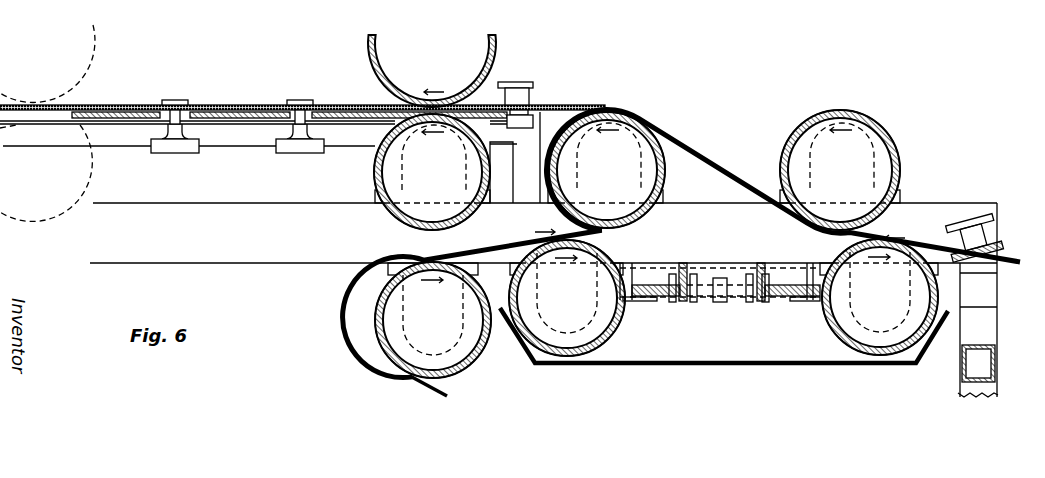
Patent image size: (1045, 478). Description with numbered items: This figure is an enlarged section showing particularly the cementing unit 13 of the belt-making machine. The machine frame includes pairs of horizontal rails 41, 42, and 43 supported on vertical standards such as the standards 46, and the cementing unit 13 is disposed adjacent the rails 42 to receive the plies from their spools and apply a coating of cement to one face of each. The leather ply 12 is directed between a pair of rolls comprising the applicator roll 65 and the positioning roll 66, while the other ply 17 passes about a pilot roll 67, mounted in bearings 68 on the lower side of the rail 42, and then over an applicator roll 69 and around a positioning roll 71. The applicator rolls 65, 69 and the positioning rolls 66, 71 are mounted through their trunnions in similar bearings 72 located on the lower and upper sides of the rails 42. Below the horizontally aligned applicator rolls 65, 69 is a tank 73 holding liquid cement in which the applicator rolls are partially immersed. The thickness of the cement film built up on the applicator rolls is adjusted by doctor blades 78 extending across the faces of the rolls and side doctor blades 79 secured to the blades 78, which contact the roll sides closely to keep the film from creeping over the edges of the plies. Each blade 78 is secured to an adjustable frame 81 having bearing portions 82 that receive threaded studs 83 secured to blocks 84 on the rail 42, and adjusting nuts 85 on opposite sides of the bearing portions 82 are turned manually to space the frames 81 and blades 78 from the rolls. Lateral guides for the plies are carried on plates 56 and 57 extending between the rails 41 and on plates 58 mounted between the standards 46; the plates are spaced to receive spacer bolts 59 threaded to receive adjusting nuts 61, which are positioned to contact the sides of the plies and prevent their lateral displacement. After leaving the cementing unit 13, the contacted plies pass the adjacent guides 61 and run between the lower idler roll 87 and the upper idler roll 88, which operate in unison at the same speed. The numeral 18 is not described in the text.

The ply 12 is at (690, 140).
The cementing unit 13 is at (711, 93).
The ply 17 is at (400, 383).
The bearing plate 18 is at (627, 295).
The horizontal rails 41 is at (242, 130).
The horizontal rails 42 is at (543, 300).
The horizontal rails 43 is at (904, 0).
The vertical standards 46 is at (978, 330).
The plate 56 is at (361, 88).
The plate 57 is at (528, 117).
The plates 58 is at (943, 250).
The spacer bolts 59 is at (313, 90).
The adjusting nuts 61 is at (178, 153).
The applicator roll 65 is at (897, 354).
The positioning roll 66 is at (874, 120).
The pilot roll 67 is at (460, 357).
The bearings 68 is at (402, 317).
The applicator roll 69 is at (595, 352).
The positioning roll 71 is at (645, 121).
The bearings 72 is at (807, 143).
The tank 73 is at (748, 360).
The doctor blades 78 is at (780, 302).
The doctor blades 79 is at (658, 294).
The adjustable frame 81 is at (772, 262).
The bearing portions 82 is at (692, 262).
The threaded studs 83 is at (742, 278).
The blocks 84 is at (708, 268).
The adjusting nuts 85 is at (698, 302).
The idler roll 87 is at (378, 172).
The idler roll 88 is at (148, 0).